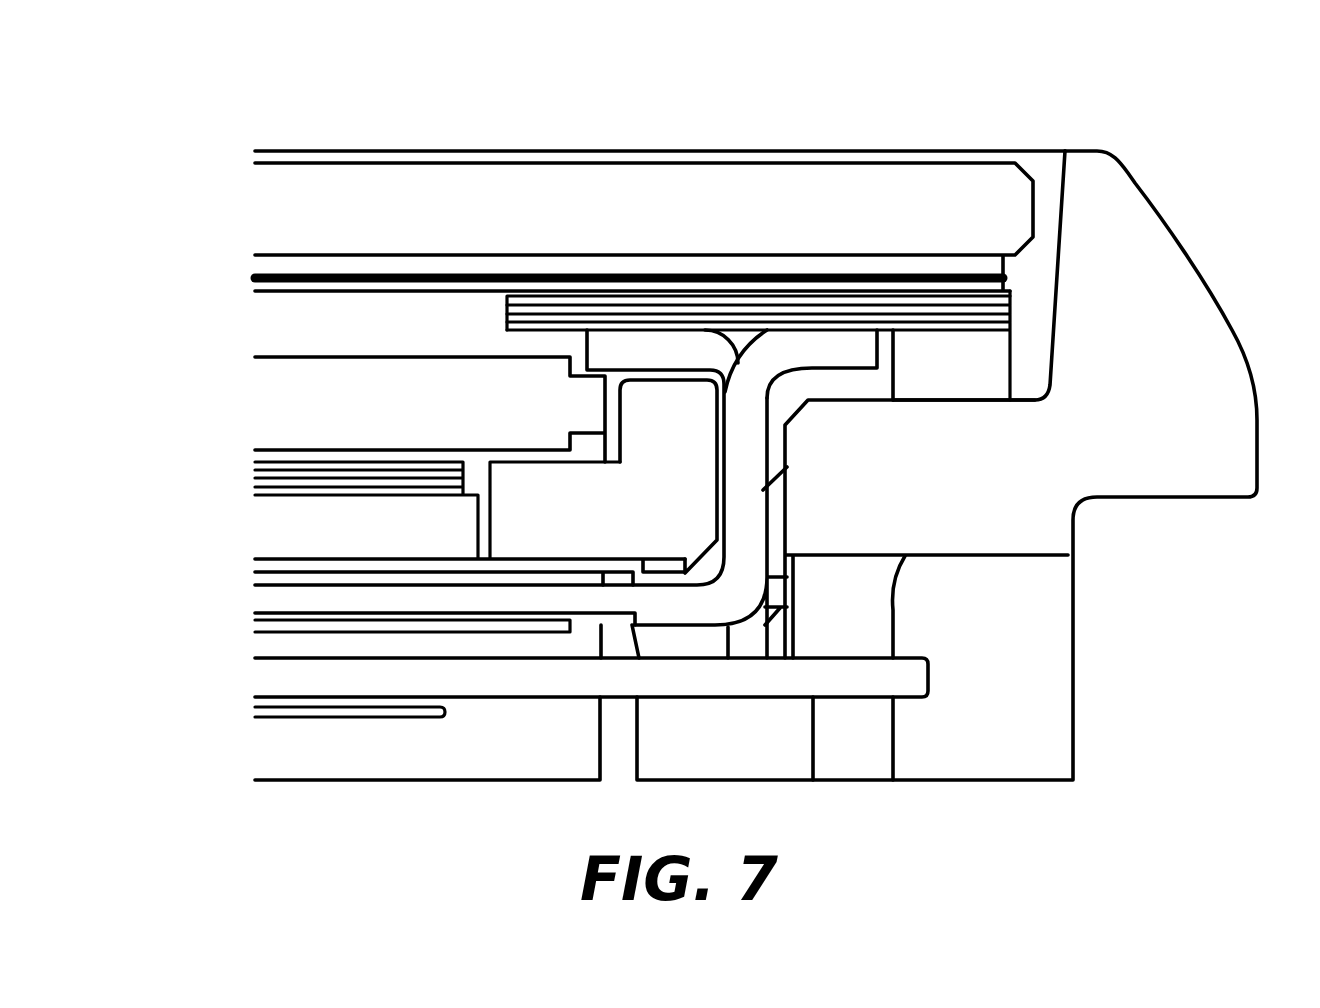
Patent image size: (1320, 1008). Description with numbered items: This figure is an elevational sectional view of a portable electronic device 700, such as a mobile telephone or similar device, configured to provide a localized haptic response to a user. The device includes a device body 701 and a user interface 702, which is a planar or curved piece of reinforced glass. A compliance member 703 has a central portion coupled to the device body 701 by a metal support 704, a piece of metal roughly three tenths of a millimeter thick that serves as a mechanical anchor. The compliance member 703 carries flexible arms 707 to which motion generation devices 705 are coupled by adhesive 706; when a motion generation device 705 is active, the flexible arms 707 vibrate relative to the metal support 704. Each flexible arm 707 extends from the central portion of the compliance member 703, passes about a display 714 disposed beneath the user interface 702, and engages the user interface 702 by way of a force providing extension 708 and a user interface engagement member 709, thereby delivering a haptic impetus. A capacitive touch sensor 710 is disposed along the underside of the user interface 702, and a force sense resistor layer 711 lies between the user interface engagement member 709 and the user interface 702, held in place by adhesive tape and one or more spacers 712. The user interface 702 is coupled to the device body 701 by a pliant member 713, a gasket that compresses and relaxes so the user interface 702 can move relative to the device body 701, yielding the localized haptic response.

The portable electronic device 700 is at (1166, 151).
The device body 701 is at (1168, 385).
The user interface 702 is at (515, 160).
The compliance member 703 is at (663, 603).
The metal support 704 is at (887, 675).
The motion generation device 705 is at (518, 625).
The adhesive 706 is at (326, 615).
The flexible arm 707 is at (382, 603).
The force providing extension 708 is at (750, 452).
The user interface engagement member 709 is at (838, 348).
The capacitive touch sensor 710 is at (238, 276).
The force sense resistor layer 711 is at (722, 300).
The spacer 712 is at (571, 316).
The pliant member 713 is at (950, 372).
The display 714 is at (352, 404).